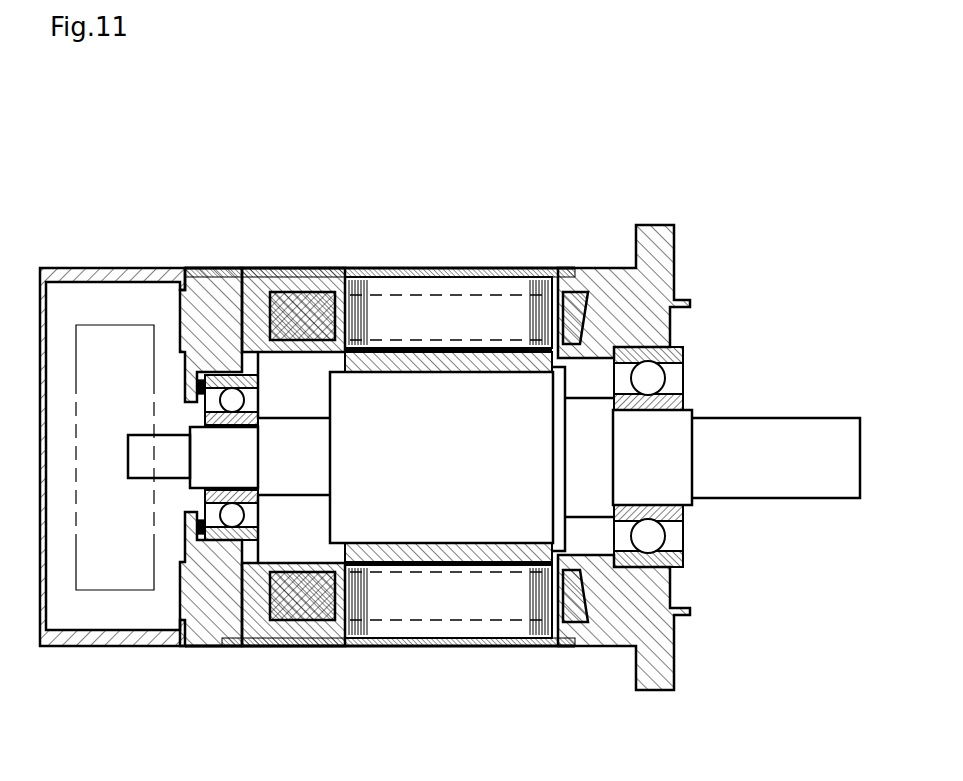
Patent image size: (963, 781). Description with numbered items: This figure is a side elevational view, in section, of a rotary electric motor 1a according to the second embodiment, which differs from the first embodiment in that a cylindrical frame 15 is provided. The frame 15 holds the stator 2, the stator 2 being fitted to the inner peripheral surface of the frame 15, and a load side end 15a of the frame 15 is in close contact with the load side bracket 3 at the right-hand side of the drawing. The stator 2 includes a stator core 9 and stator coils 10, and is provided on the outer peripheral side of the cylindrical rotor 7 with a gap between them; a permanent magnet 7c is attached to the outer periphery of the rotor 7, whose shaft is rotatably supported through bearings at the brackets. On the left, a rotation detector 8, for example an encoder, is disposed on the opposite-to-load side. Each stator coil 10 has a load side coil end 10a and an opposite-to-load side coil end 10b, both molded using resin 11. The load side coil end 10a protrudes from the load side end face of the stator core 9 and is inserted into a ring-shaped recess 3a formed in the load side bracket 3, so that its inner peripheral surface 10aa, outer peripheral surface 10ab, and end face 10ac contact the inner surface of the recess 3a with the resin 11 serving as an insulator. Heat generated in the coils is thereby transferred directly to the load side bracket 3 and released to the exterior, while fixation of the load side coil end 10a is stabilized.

The rotary electric motor 1a is at (328, 232).
The stator 2 is at (448, 415).
The load side bracket 3 is at (685, 434).
The recess 3a is at (587, 327).
The rotor 7 is at (494, 421).
The permanent magnet 7c is at (373, 550).
The rotation detector 8 is at (115, 343).
The stator core 9 is at (455, 603).
The stator coils 10 is at (298, 603).
The load side coil end 10a is at (587, 602).
The inner peripheral surface 10aa is at (582, 360).
The outer peripheral surface 10ab is at (585, 300).
The end face 10ac is at (587, 307).
The opposite-to-load side coil end 10b is at (290, 306).
The resin 11 is at (317, 632).
The frame 15 is at (480, 268).
The load side end 15a is at (573, 268).